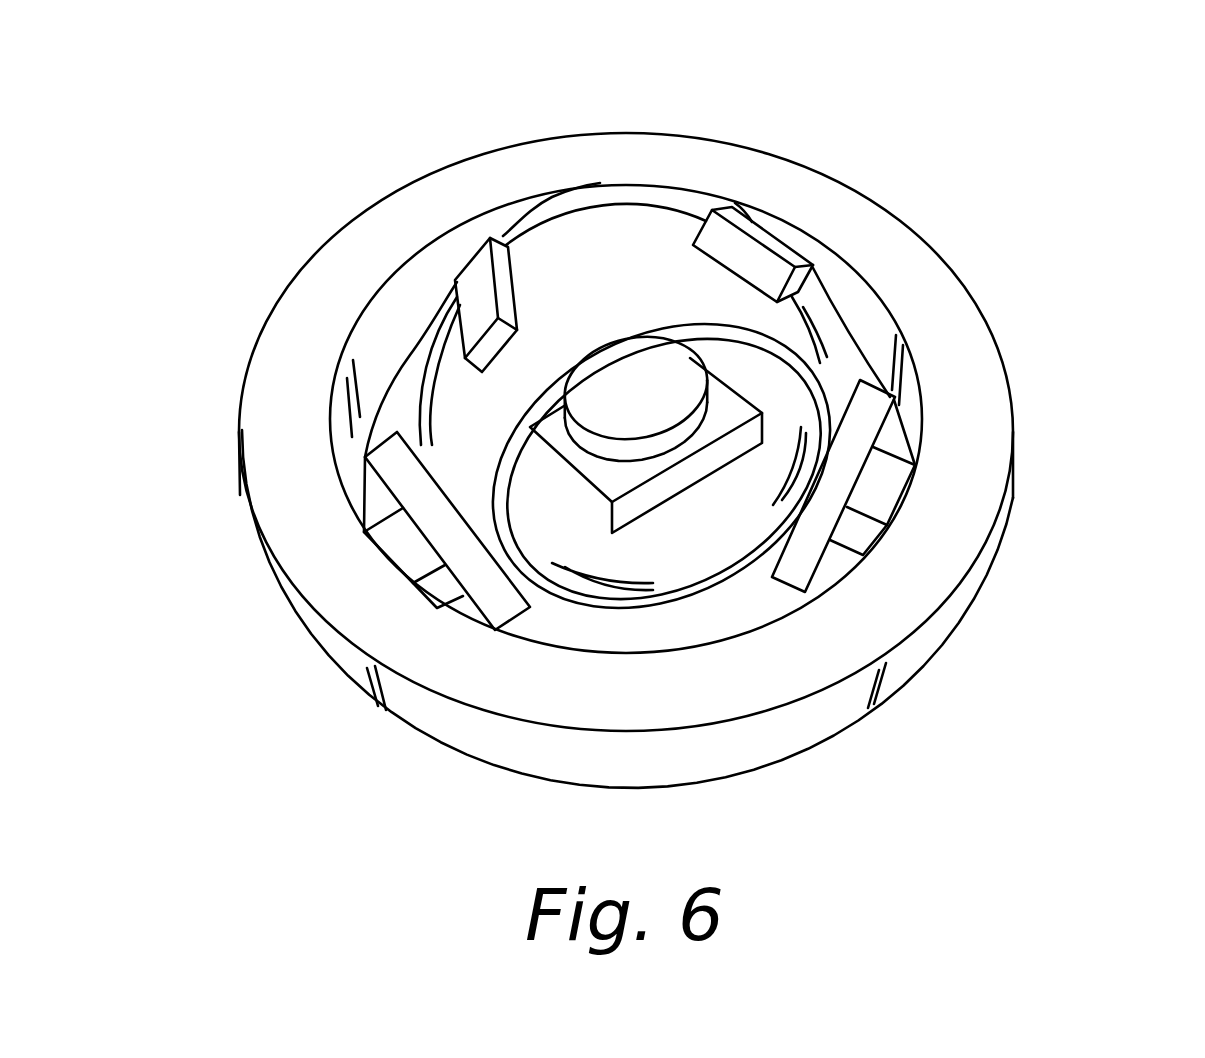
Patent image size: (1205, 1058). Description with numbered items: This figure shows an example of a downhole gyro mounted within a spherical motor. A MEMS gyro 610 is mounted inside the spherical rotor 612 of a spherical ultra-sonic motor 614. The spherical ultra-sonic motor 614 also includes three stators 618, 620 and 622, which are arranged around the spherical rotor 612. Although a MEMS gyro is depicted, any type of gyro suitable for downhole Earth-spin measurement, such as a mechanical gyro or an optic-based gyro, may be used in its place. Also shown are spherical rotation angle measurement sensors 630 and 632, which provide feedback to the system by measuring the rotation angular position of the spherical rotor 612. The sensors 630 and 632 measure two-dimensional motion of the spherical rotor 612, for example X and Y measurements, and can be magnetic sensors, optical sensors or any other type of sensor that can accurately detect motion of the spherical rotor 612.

The MEMS gyro 610 is at (673, 406).
The spherical rotor 612 is at (667, 243).
The spherical ultra-sonic motor 614 is at (1050, 148).
The stator 618 is at (840, 455).
The stator 620 is at (423, 490).
The stator 622 is at (585, 197).
The spherical rotation angle measurement sensor 630 is at (482, 300).
The spherical rotation angle measurement sensor 632 is at (748, 228).